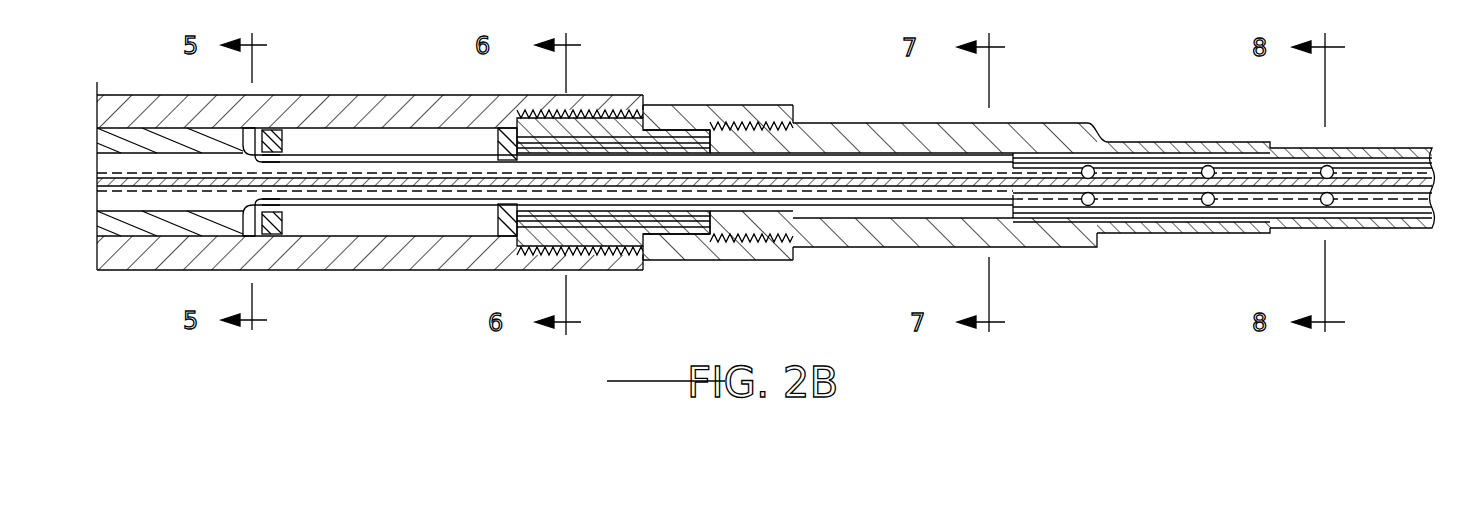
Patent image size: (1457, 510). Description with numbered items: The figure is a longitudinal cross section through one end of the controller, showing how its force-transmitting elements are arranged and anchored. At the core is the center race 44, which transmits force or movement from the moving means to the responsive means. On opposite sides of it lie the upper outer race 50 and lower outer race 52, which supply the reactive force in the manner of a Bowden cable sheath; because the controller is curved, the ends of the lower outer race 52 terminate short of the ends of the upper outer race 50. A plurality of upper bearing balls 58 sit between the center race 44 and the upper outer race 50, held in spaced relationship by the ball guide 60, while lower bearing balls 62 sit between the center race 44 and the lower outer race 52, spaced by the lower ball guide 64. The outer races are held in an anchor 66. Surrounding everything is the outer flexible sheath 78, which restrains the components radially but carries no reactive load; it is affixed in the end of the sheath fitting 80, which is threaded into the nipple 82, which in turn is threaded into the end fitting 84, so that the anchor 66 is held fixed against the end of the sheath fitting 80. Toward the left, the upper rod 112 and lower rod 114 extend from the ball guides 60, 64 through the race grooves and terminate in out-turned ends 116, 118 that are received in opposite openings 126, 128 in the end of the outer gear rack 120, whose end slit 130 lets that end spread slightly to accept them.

The center race 44 is at (893, 177).
The upper outer race 50 is at (825, 156).
The lower outer race 52 is at (825, 207).
The upper bearing balls 58 is at (1327, 165).
The ball guide 60 is at (1130, 170).
The lower bearing balls 62 is at (1326, 206).
The lower ball guide 64 is at (1120, 207).
The anchor 66 is at (684, 128).
The outer flexible sheath 78 is at (1390, 147).
The sheath fitting 80 is at (890, 248).
The nipple 82 is at (712, 260).
The end fitting 84 is at (458, 273).
The upper rod 112 is at (393, 155).
The lower rod 114 is at (403, 207).
The out-turned end 116 is at (285, 130).
The out-turned end 118 is at (227, 223).
The outer gear rack 120 is at (168, 123).
The opening 126 is at (253, 130).
The opening 128 is at (253, 234).
The end slit 130 is at (163, 180).